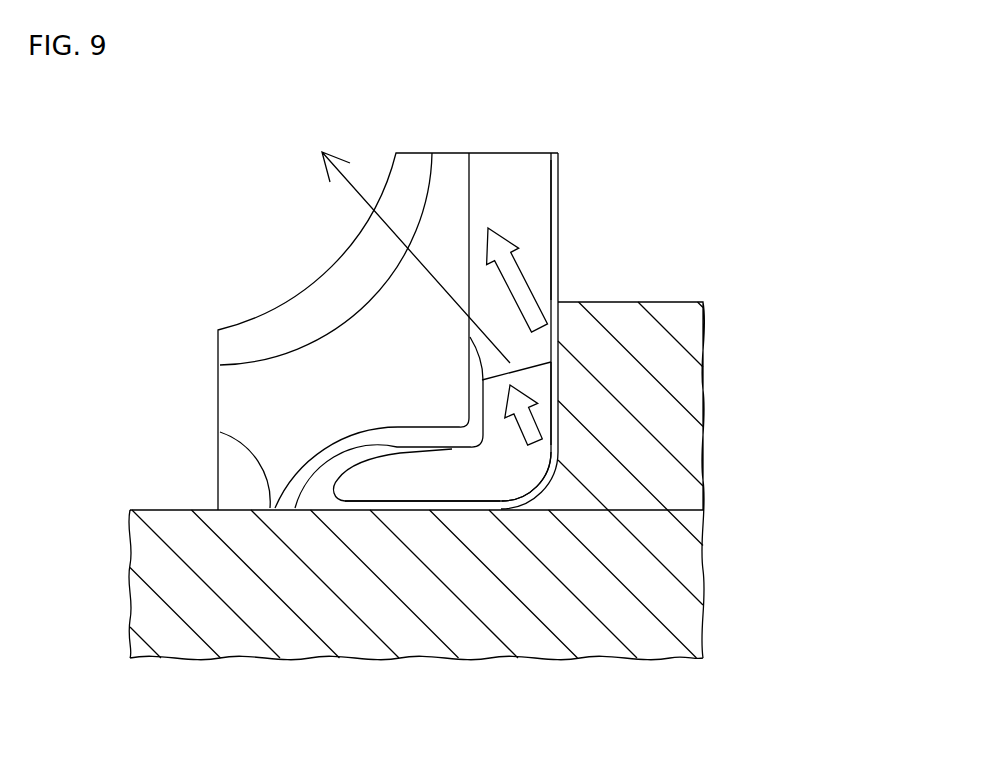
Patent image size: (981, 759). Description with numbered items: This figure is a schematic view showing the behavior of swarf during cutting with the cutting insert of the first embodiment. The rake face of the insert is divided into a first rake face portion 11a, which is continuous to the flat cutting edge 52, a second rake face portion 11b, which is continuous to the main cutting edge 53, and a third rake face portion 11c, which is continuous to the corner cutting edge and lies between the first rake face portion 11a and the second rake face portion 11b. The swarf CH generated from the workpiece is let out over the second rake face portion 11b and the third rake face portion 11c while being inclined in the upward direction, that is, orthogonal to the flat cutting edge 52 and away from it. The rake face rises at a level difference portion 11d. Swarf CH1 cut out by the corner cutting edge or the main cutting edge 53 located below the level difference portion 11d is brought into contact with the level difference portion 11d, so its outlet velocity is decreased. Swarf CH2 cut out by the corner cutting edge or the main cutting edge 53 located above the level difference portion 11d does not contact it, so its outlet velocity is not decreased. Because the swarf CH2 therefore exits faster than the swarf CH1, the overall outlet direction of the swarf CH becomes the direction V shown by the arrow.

The first rake face portion 11a is at (397, 483).
The second rake face portion 11b is at (540, 175).
The third rake face portion 11c is at (513, 505).
The level difference portion 11d is at (557, 397).
The flat cutting edge 52 is at (415, 512).
The main cutting edge 53 is at (558, 200).
The swarf CH is at (870, 255).
The swarf cut out below the level difference portion CH1 is at (557, 445).
The swarf cut out above the level difference portion CH2 is at (540, 282).
The outlet direction of swarf V is at (405, 244).